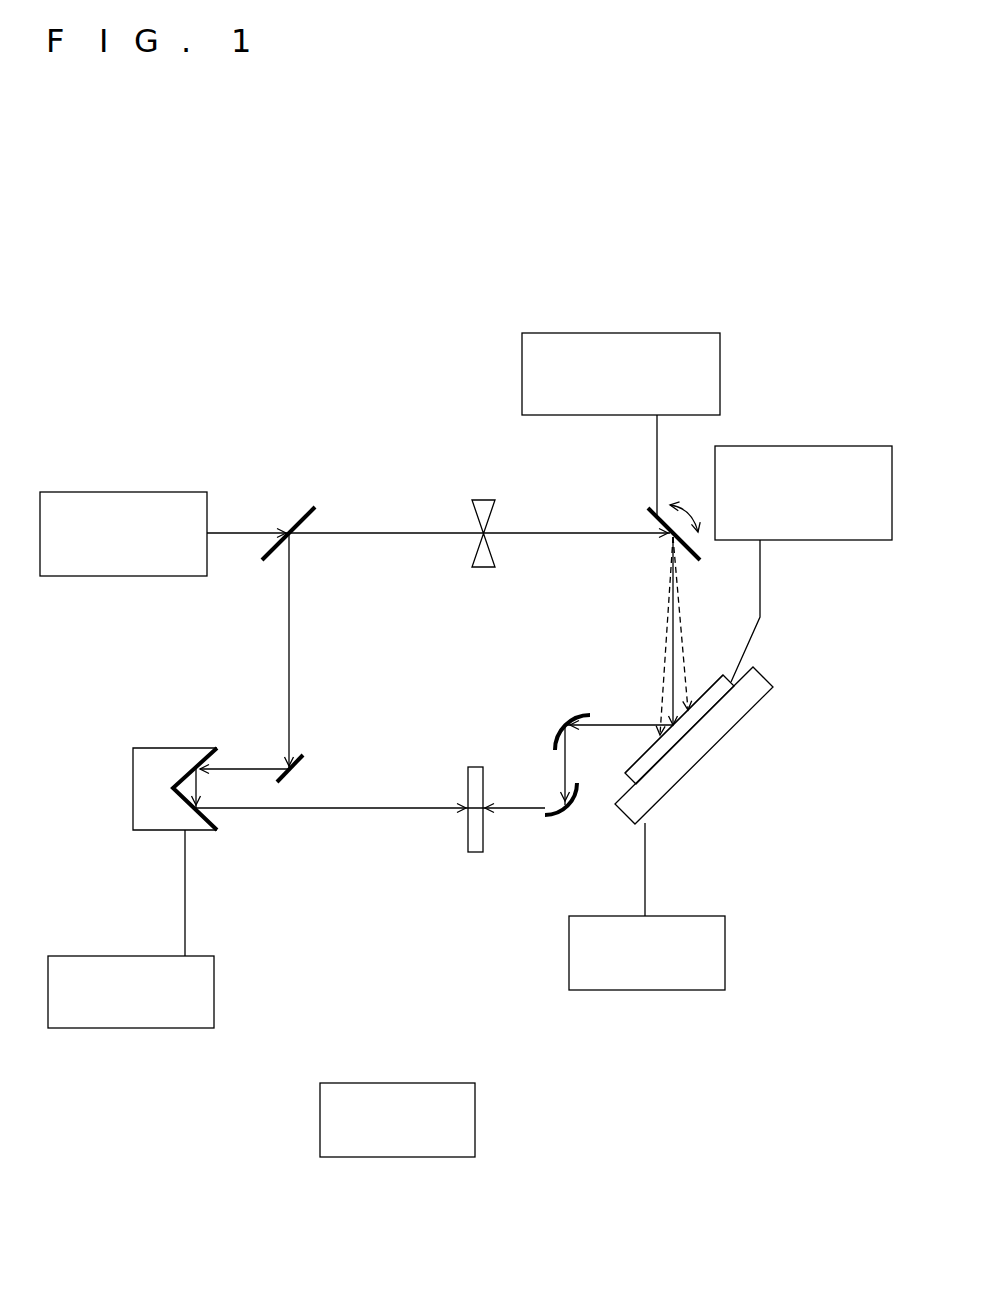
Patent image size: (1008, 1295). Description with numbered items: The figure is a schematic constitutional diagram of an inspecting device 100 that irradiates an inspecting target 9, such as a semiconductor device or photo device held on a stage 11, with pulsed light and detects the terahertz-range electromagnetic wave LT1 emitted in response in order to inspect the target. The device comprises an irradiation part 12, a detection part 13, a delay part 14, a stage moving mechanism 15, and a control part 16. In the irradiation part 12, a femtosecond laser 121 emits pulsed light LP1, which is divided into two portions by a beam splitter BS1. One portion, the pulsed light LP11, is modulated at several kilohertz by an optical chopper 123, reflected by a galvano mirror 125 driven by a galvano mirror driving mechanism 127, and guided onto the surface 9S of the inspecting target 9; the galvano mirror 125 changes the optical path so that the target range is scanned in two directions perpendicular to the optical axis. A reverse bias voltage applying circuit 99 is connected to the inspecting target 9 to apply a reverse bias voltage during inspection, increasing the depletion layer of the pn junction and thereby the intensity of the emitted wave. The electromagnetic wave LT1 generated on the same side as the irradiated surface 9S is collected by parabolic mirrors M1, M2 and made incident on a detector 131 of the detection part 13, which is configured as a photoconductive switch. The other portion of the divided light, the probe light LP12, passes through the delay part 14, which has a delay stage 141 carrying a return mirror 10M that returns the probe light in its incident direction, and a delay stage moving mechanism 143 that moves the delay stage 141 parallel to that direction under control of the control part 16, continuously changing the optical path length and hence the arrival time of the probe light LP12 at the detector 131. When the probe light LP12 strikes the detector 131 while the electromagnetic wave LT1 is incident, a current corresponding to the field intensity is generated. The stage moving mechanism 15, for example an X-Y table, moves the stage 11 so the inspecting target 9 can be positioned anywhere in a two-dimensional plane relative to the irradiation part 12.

The inspecting device 100 is at (157, 375).
The irradiation part 12 is at (330, 417).
The femtosecond laser 121 is at (100, 492).
The pulsed light LP1 is at (228, 532).
The beam splitter BS1 is at (314, 506).
The pulsed light LP11 is at (386, 532).
The optical chopper 123 is at (488, 500).
The galvano mirror driving mechanism 127 is at (521, 368).
The galvano mirror 125 is at (645, 506).
The reverse bias voltage applying circuit 99 is at (802, 445).
The surface 9S is at (713, 684).
The inspecting target 9 is at (645, 770).
The stage 11 is at (710, 744).
The stage moving mechanism 15 is at (726, 953).
The detection part 13 is at (458, 925).
The detector 131 is at (478, 766).
The parabolic mirror M1 is at (580, 715).
The parabolic mirror M2 is at (555, 822).
The electromagnetic wave LT1 is at (626, 724).
The delay part 14 is at (267, 876).
The probe light LP12 is at (290, 640).
The return mirror 10M is at (220, 757).
The delay stage 141 is at (132, 790).
The delay stage moving mechanism 143 is at (215, 996).
The control part 16 is at (476, 1120).